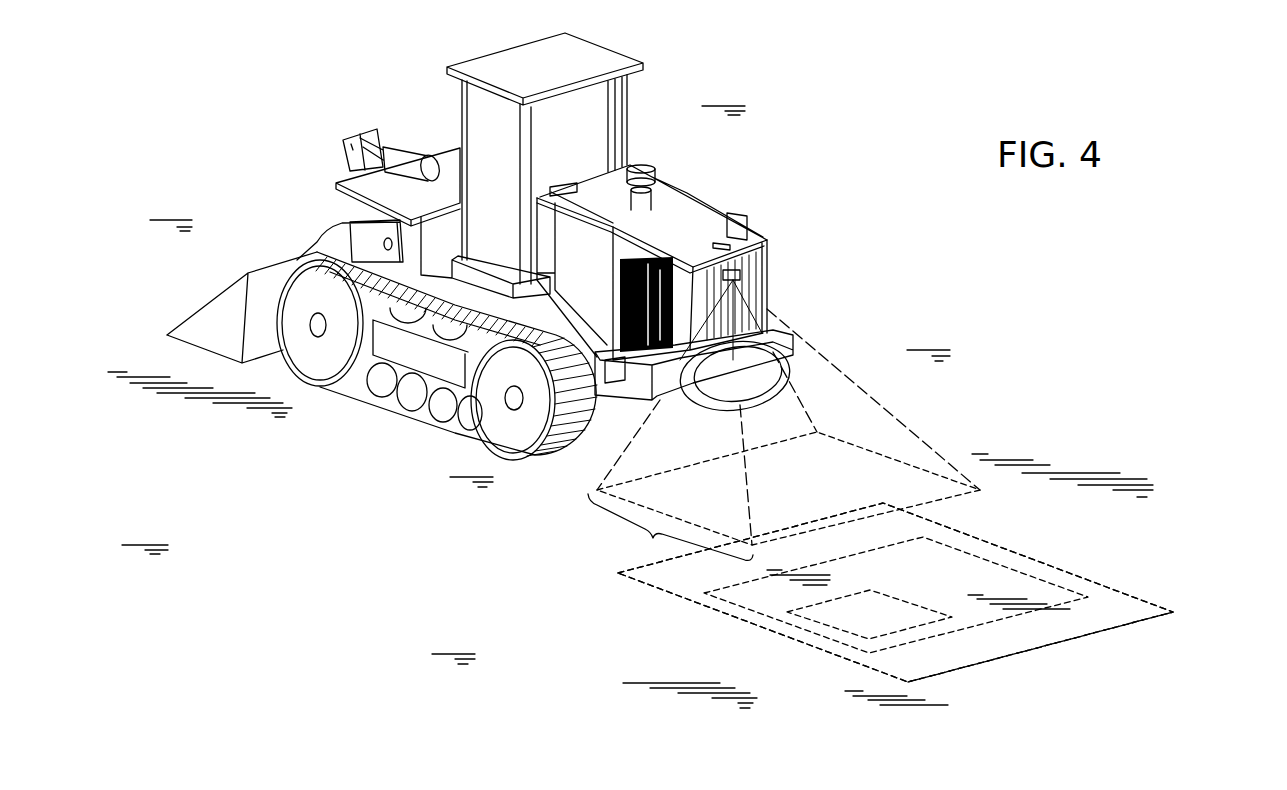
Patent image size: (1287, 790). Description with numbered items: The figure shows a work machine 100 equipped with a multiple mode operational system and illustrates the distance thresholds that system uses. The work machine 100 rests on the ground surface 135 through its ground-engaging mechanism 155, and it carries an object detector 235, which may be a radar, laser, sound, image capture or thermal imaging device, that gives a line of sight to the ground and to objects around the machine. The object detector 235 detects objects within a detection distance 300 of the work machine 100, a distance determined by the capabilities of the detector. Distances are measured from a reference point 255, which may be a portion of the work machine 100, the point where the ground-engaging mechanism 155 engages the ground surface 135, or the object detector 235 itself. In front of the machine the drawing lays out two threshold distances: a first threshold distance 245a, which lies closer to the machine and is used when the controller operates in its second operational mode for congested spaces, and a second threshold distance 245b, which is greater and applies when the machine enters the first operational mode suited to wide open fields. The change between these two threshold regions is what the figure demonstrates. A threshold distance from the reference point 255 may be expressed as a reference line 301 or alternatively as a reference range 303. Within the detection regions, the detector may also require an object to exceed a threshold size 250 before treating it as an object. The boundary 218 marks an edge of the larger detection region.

The work machine 100 is at (538, 246).
The ground surface 135 is at (338, 519).
The ground-engaging mechanism 155 is at (379, 187).
The boundary of detection region 218 is at (1010, 630).
The object detector 235 is at (794, 310).
The first threshold distance 245a is at (822, 494).
The second threshold distance 245b is at (952, 581).
The threshold size 250 is at (888, 626).
The reference point 255 is at (647, 91).
The detection distance 300 is at (988, 662).
The reference line 301 is at (575, 560).
The reference range 303 is at (670, 531).